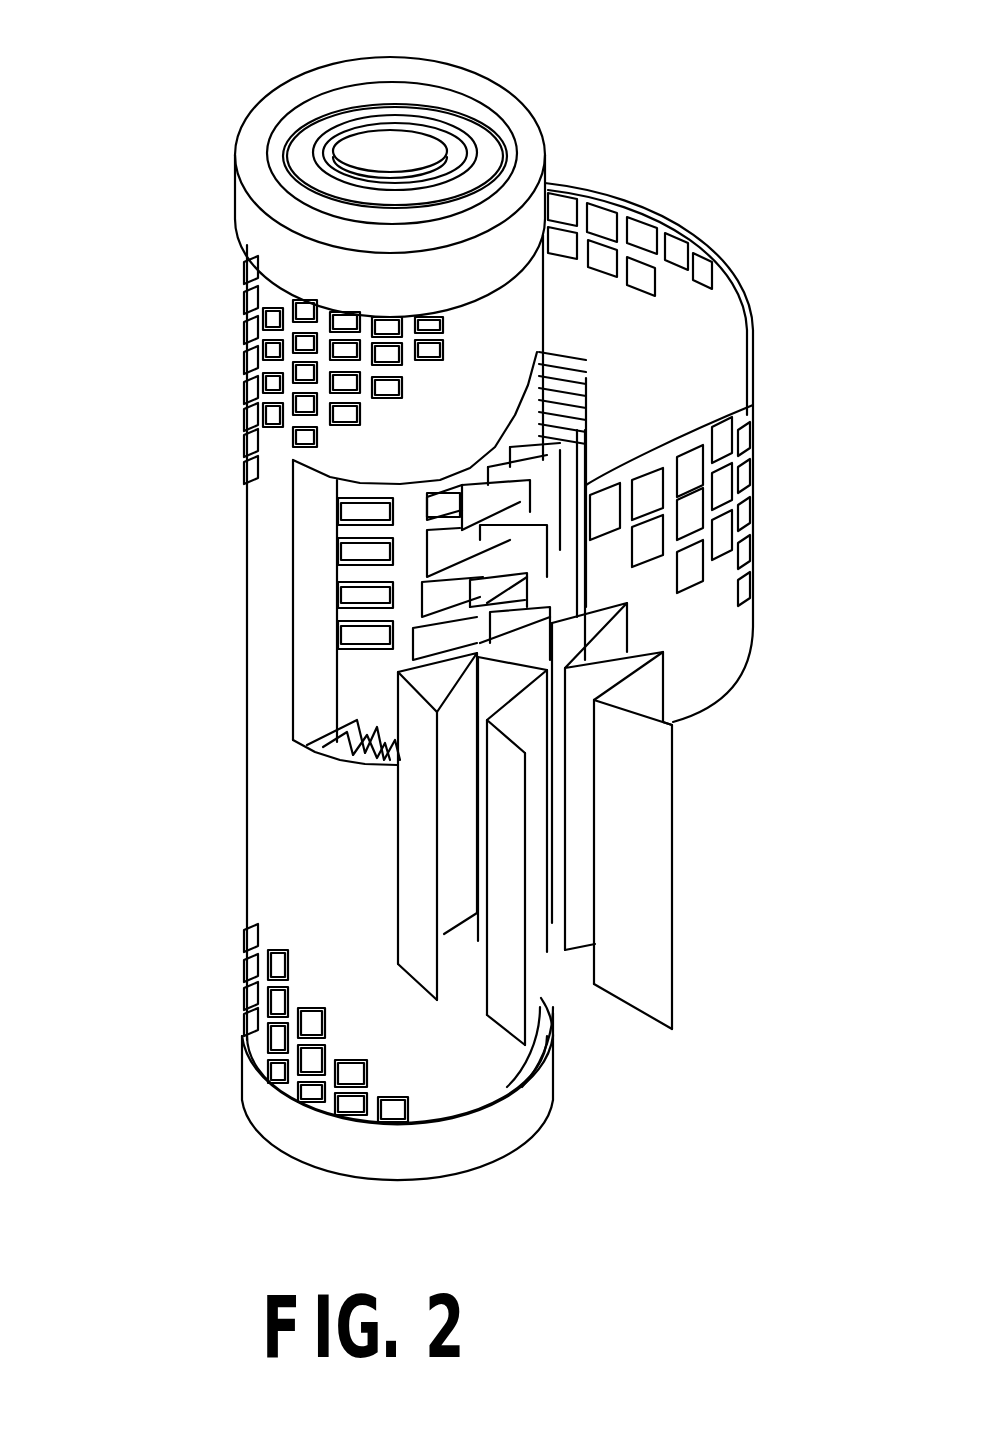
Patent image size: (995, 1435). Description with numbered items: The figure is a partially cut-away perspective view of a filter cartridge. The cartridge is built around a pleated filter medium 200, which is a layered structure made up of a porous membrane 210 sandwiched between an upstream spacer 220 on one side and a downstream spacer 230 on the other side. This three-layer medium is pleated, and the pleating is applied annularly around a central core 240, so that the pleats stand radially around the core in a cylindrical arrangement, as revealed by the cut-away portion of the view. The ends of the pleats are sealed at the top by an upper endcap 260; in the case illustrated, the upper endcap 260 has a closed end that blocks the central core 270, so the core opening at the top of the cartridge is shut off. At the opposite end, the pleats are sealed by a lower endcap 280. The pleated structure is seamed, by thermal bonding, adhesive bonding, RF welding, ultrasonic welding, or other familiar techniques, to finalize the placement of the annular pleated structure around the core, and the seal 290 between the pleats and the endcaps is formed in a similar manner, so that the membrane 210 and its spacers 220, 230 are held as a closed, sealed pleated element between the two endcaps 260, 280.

The pleated filter medium 200 is at (722, 765).
The porous membrane 210 is at (508, 963).
The upstream spacer 220 is at (652, 940).
The downstream spacer 230 is at (418, 915).
The central core 240 is at (375, 672).
The upper endcap 260 is at (262, 219).
The central core 270 is at (385, 140).
The lower endcap 280 is at (508, 1153).
The seal 290 is at (347, 347).